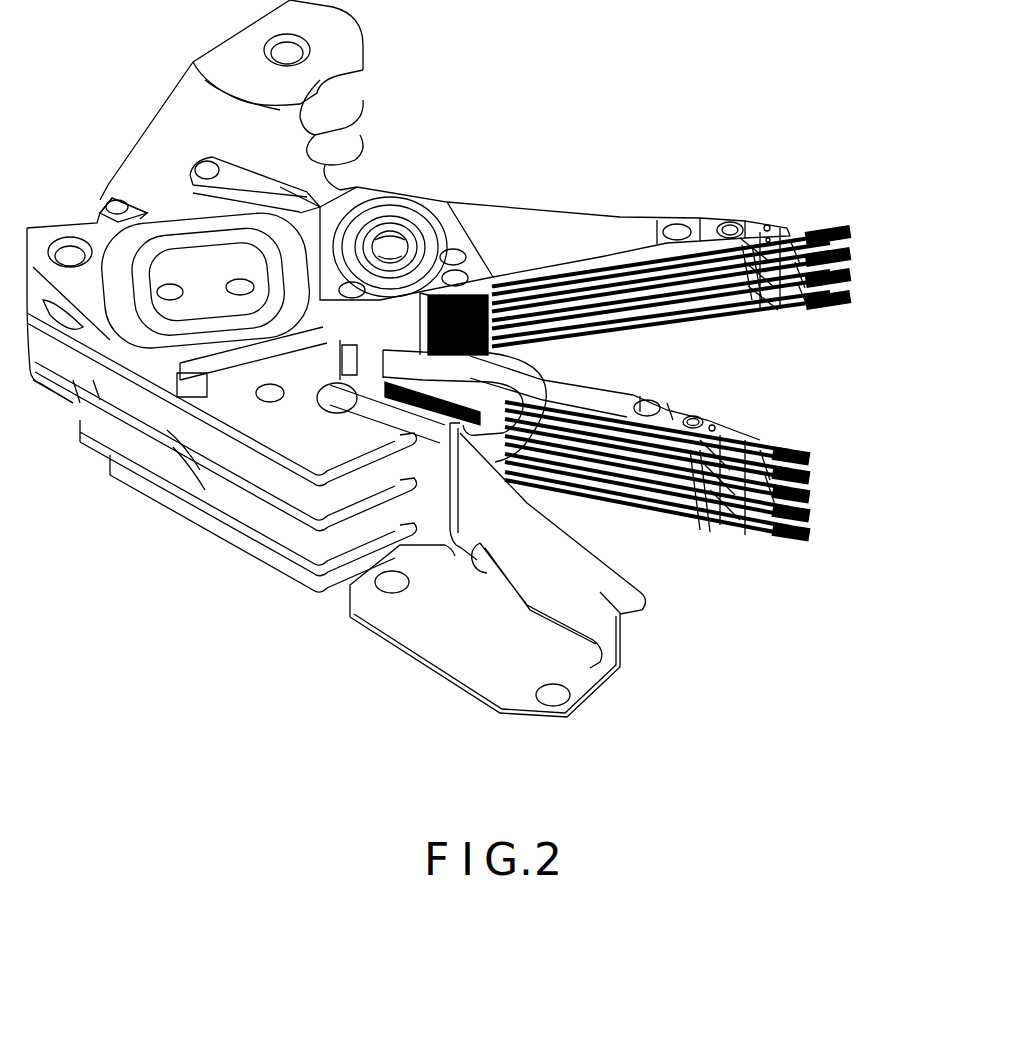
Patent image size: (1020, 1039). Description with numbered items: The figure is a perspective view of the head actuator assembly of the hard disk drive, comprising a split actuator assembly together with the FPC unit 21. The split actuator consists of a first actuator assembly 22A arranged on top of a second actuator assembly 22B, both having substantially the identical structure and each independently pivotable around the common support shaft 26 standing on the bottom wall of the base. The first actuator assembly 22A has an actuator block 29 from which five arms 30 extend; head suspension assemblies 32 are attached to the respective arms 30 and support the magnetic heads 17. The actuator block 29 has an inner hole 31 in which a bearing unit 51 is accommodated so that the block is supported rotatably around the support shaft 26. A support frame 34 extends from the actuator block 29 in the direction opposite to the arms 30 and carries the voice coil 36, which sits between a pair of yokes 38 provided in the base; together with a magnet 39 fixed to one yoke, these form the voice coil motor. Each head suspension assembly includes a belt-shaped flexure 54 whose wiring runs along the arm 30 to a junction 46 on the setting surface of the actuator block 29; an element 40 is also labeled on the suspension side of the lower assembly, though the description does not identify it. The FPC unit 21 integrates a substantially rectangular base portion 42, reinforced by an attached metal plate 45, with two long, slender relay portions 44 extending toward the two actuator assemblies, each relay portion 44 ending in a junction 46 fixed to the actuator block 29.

The magnetic head 17 is at (848, 235).
The FPC unit 21 is at (517, 601).
The first actuator assembly 22A is at (530, 168).
The second actuator assembly 22B is at (652, 522).
The support shaft 26 is at (388, 237).
The actuator block 29 is at (412, 203).
The arm 30 is at (617, 296).
The inner hole 31 is at (381, 212).
The head suspension assembly 32 is at (762, 218).
The support frame 34 is at (172, 200).
The voice coil 36 is at (147, 213).
The yoke 38 is at (268, 498).
The magnet 39 is at (187, 412).
The load beam 40 is at (750, 432).
The base portion 42 is at (596, 592).
The relay portion 44 is at (553, 372).
The metal plate 45 is at (428, 640).
The junction 46 is at (465, 280).
The bearing unit 51 is at (436, 220).
The flexure 54 is at (745, 322).